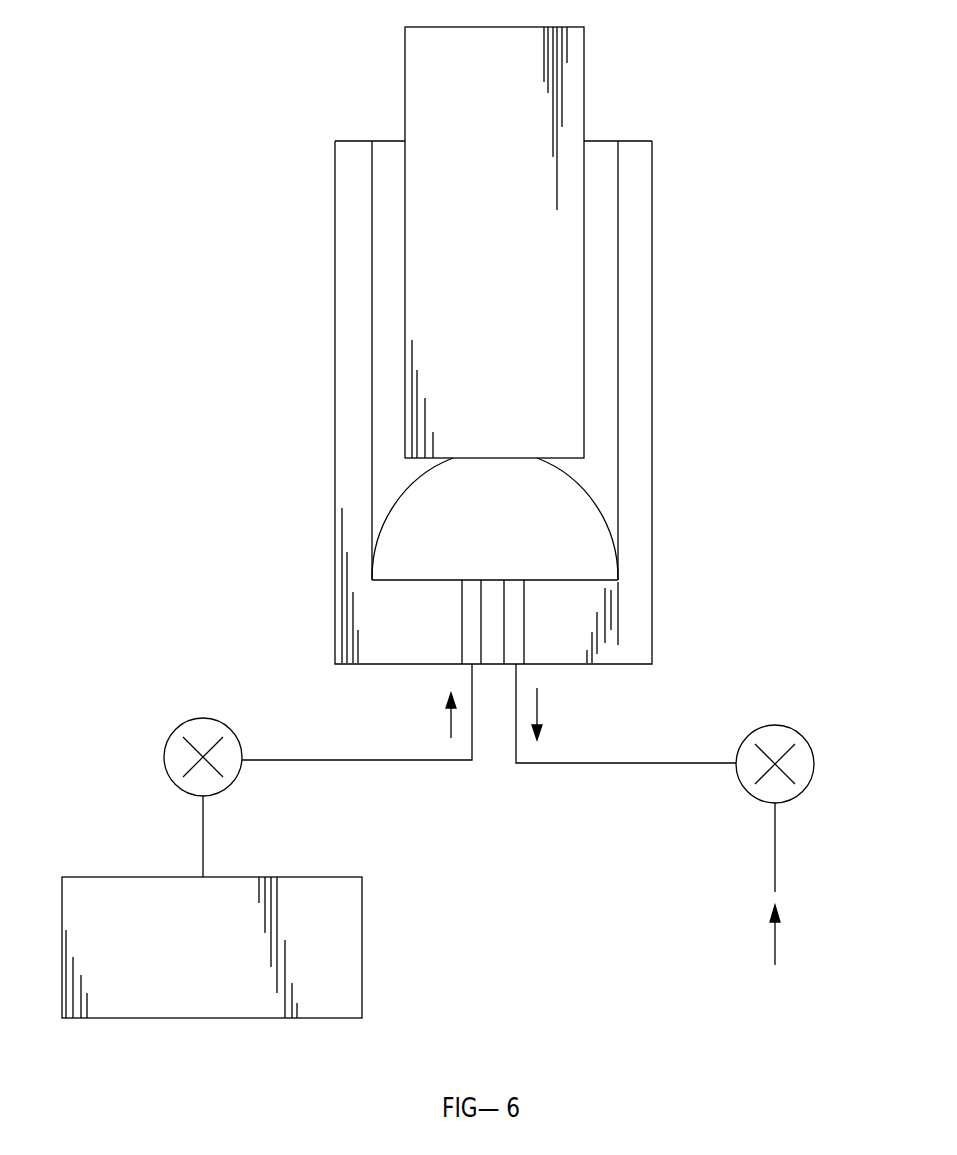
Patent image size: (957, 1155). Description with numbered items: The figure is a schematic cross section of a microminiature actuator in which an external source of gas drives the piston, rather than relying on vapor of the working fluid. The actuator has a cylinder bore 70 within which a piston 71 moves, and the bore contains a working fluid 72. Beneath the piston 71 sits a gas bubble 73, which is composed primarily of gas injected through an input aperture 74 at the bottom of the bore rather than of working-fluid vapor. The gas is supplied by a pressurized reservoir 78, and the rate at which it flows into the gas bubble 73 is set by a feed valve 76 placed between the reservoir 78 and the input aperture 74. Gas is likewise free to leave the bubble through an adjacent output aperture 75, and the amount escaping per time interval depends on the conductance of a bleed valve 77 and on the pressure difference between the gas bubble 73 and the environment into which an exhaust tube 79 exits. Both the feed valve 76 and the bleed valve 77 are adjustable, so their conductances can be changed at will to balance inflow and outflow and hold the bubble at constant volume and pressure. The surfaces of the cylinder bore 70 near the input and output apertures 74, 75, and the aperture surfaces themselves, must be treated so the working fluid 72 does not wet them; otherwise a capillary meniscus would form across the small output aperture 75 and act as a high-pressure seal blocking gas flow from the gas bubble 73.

The cylinder bore 70 is at (618, 141).
The piston 71 is at (405, 90).
The working fluid 72 is at (605, 332).
The gas bubble 73 is at (545, 511).
The input aperture 74 is at (462, 613).
The output aperture 75 is at (524, 613).
The feed valve 76 is at (174, 733).
The bleed valve 77 is at (803, 735).
The pressurized reservoir 78 is at (362, 927).
The exhaust tube 79 is at (775, 954).